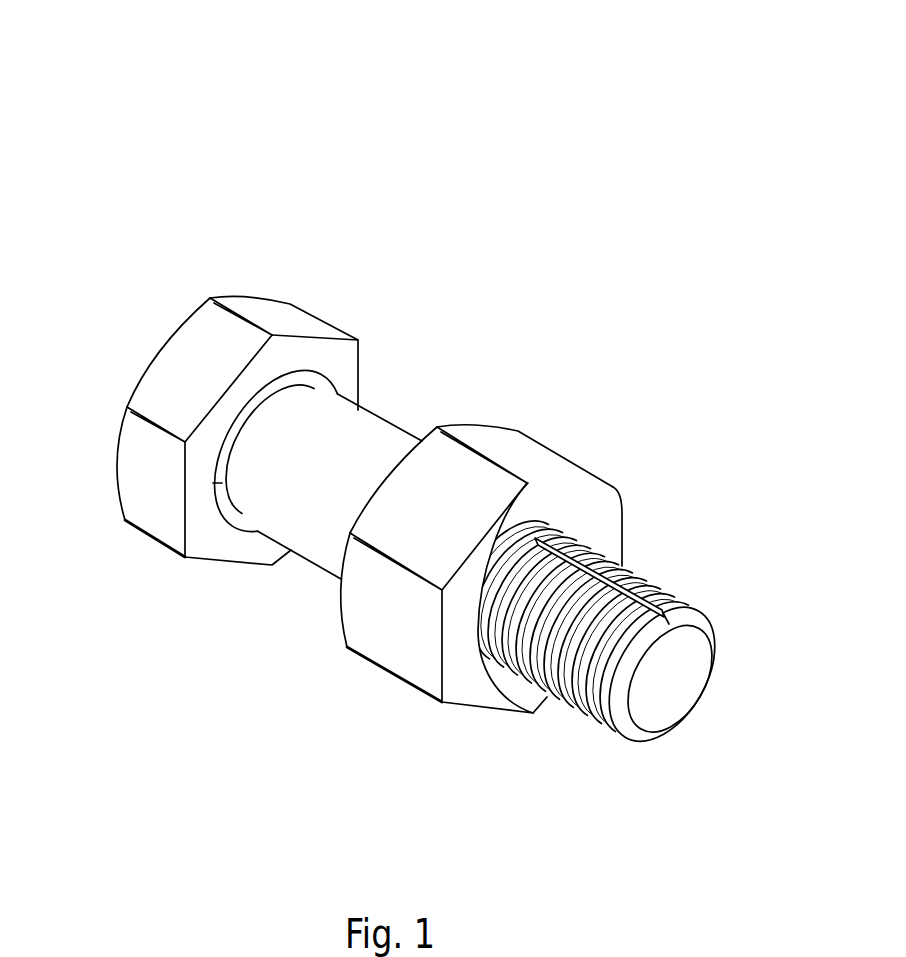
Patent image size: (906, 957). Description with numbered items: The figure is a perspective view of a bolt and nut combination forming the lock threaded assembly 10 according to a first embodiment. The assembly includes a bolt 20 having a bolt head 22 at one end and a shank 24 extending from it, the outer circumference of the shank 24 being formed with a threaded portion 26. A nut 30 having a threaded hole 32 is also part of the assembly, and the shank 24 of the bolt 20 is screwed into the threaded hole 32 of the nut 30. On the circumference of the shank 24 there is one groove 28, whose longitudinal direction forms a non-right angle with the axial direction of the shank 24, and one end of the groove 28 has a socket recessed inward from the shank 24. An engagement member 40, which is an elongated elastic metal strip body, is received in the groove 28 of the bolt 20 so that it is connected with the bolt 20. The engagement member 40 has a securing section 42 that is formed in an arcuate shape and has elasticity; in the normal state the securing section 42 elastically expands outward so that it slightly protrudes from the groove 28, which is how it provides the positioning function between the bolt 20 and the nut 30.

The lock threaded assembly 10 is at (567, 152).
The bolt 20 is at (222, 253).
The bolt head 22 is at (175, 372).
The shank 24 is at (370, 450).
The threaded portion 26 is at (665, 587).
The groove 28 is at (700, 608).
The nut 30 is at (583, 437).
The threaded hole 32 is at (496, 660).
The engagement member 40 is at (650, 578).
The securing section 42 is at (646, 576).